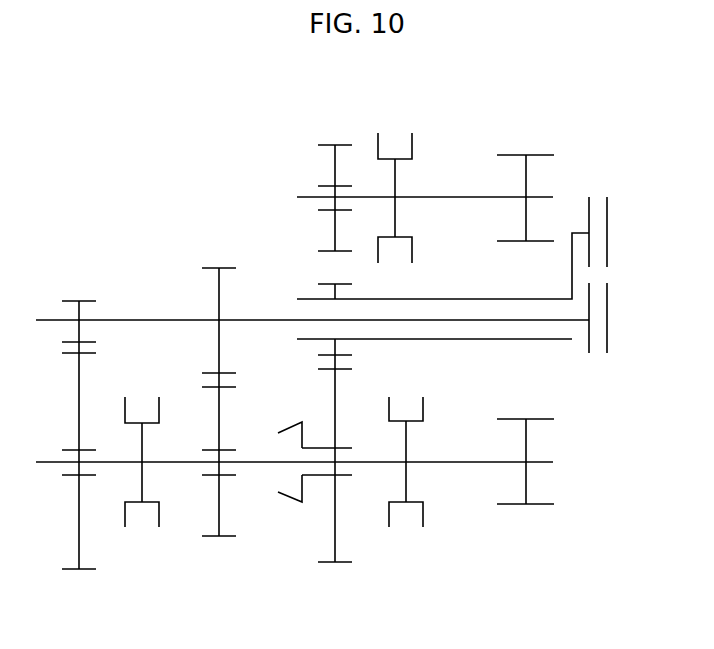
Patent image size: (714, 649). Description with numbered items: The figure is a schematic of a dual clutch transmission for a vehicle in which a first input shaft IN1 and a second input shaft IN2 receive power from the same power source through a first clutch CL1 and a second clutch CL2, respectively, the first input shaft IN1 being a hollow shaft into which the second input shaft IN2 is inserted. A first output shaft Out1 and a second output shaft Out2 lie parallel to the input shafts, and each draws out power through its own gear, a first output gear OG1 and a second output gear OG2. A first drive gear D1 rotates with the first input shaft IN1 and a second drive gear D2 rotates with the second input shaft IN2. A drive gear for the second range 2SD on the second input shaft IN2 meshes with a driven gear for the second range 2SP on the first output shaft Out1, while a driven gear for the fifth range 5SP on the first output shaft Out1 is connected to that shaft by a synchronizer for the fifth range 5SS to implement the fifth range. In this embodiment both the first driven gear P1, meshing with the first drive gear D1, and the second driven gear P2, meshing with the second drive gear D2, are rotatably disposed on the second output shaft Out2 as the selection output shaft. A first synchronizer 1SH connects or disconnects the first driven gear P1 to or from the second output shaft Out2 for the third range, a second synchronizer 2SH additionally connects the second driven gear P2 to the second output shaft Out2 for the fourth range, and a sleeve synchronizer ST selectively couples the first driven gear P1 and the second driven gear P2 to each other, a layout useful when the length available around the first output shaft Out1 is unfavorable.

The drive gear for a second range 2SD is at (72, 301).
The driven gear for a second range 2SP is at (70, 570).
The second synchronizer 2SH is at (143, 531).
The second drive gear D2 is at (212, 268).
The second driven gear P2 is at (226, 537).
The sleeve synchronizer ST is at (286, 498).
The first driven gear P1 is at (325, 563).
The first synchronizer 1SH is at (406, 531).
The driven gear for a fifth range 5SP is at (327, 145).
The synchronizer for the fifth range 5SS is at (397, 128).
The first drive gear D1 is at (325, 284).
The first output gear OG1 is at (541, 155).
The second output gear OG2 is at (514, 506).
The first output shaft Out1 is at (553, 197).
The second output shaft Out2 is at (553, 462).
The first clutch CL1 is at (608, 233).
The second clutch CL2 is at (608, 320).
The first input shaft IN1 is at (548, 339).
The second input shaft IN2 is at (506, 320).